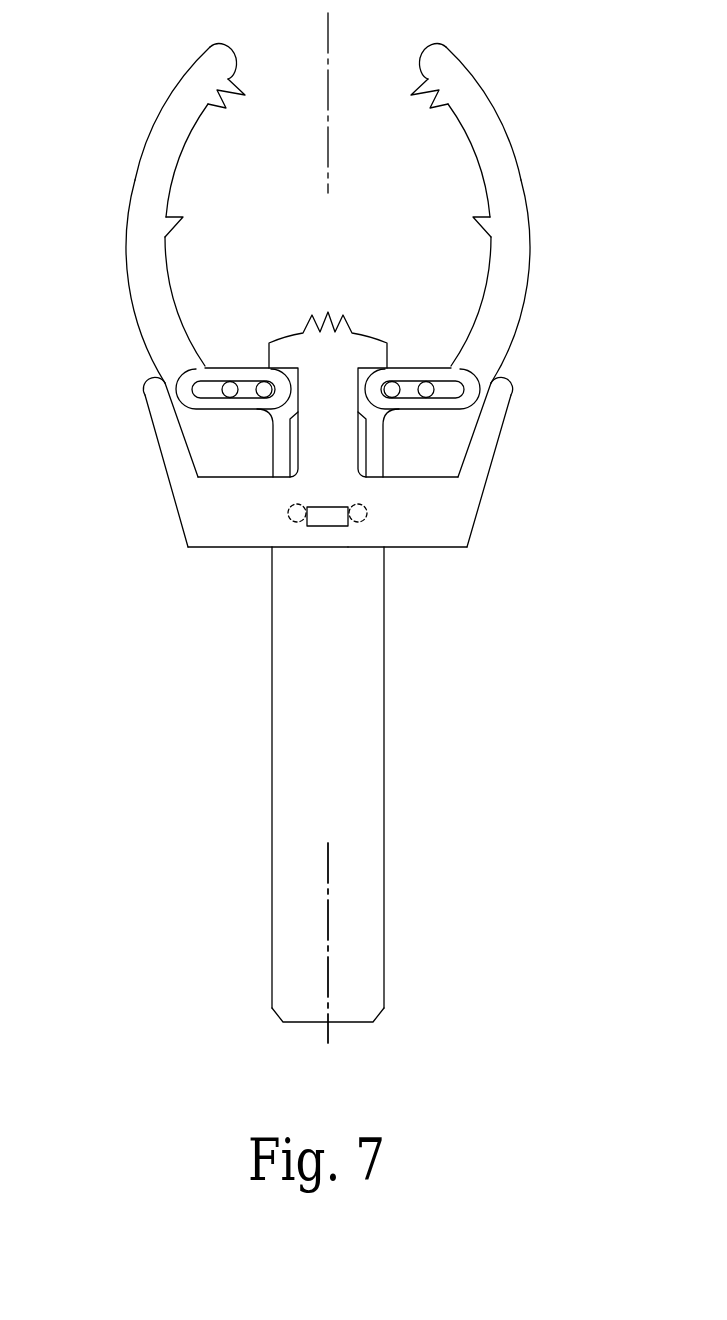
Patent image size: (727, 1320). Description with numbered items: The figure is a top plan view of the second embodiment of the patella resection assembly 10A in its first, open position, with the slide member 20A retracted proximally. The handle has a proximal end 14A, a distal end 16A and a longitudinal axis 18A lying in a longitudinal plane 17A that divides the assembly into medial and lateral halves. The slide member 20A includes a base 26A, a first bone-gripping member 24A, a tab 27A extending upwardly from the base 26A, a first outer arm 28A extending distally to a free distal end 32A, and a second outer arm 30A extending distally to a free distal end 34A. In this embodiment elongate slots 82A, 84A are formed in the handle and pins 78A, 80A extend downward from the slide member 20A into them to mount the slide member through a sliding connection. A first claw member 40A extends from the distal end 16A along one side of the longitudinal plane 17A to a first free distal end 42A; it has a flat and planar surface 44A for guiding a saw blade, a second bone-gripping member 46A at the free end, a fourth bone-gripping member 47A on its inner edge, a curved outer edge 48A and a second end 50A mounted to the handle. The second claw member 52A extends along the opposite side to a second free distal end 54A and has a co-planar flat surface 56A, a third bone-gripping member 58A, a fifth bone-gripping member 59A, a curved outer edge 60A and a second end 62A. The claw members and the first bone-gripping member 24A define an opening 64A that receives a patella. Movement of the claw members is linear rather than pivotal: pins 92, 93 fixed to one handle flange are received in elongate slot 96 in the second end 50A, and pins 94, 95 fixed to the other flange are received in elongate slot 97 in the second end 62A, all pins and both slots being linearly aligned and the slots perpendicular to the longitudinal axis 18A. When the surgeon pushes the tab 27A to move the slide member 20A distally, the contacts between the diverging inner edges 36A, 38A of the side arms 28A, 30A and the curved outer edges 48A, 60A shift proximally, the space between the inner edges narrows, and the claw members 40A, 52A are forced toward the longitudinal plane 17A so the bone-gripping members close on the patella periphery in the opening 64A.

The patella resection assembly 10A is at (373, 808).
The proximal end 14A is at (300, 1025).
The distal end 16A is at (365, 413).
The longitudinal plane 17A is at (328, 907).
The longitudinal axis 18A is at (405, 933).
The slide member 20A is at (430, 542).
The first bone-gripping member 24A is at (343, 317).
The base 26A is at (343, 533).
The tab 27A is at (323, 517).
The first outer arm 28A is at (171, 480).
The second outer arm 30A is at (485, 480).
The free distal end 32A is at (156, 381).
The free distal end 34A is at (500, 381).
The inner edge 36A is at (182, 430).
The inner edge 38A is at (474, 430).
The first claw member 40A is at (182, 77).
The first free distal end 42A is at (223, 57).
The flat and planar surface 44A is at (155, 117).
The second bone-gripping member 46A is at (238, 110).
The fourth bone-gripping member 47A is at (183, 218).
The curved outer edge 48A is at (121, 205).
The second end 50A is at (243, 372).
The second claw member 52A is at (473, 75).
The second free distal end 54A is at (433, 55).
The flat and planar surface 56A is at (507, 125).
The third bone-gripping member 58A is at (416, 108).
The fifth bone-gripping member 59A is at (473, 218).
The curved outer edge 60A is at (533, 193).
The second end 62A is at (412, 371).
The opening 64A is at (340, 248).
The pin 78A is at (288, 513).
The pin 80A is at (367, 513).
The elongate slot 82A is at (287, 450).
The elongate slot 84A is at (367, 463).
The pin 92 is at (229, 381).
The pin 93 is at (263, 381).
The pin 94 is at (392, 381).
The pin 95 is at (427, 381).
The elongate slot 96 is at (202, 382).
The elongate slot 97 is at (454, 382).